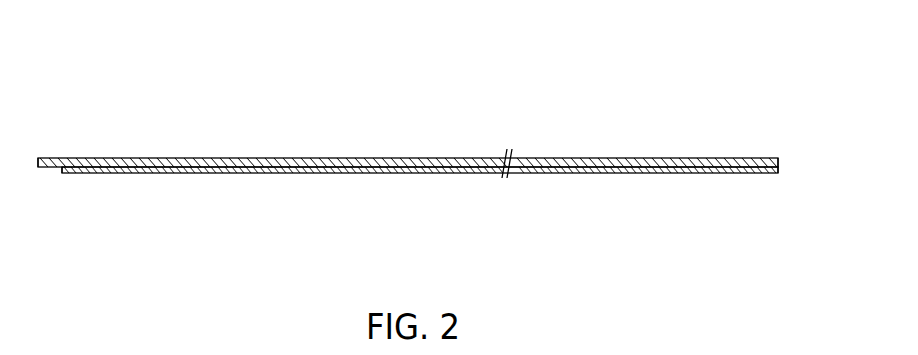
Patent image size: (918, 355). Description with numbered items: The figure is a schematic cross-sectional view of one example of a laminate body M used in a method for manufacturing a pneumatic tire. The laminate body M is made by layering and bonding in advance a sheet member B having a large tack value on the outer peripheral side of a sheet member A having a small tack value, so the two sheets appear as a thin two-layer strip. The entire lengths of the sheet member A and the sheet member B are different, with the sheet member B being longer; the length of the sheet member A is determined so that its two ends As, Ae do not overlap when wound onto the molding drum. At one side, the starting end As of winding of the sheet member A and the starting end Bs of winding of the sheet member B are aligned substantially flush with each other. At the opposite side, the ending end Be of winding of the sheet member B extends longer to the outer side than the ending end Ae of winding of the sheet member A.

The laminate body M is at (228, 55).
The sheet member A is at (332, 168).
The sheet member B is at (239, 158).
The ending end Ae is at (62, 172).
The ending end Be is at (38, 162).
The starting end As is at (780, 172).
The starting end Bs is at (780, 160).